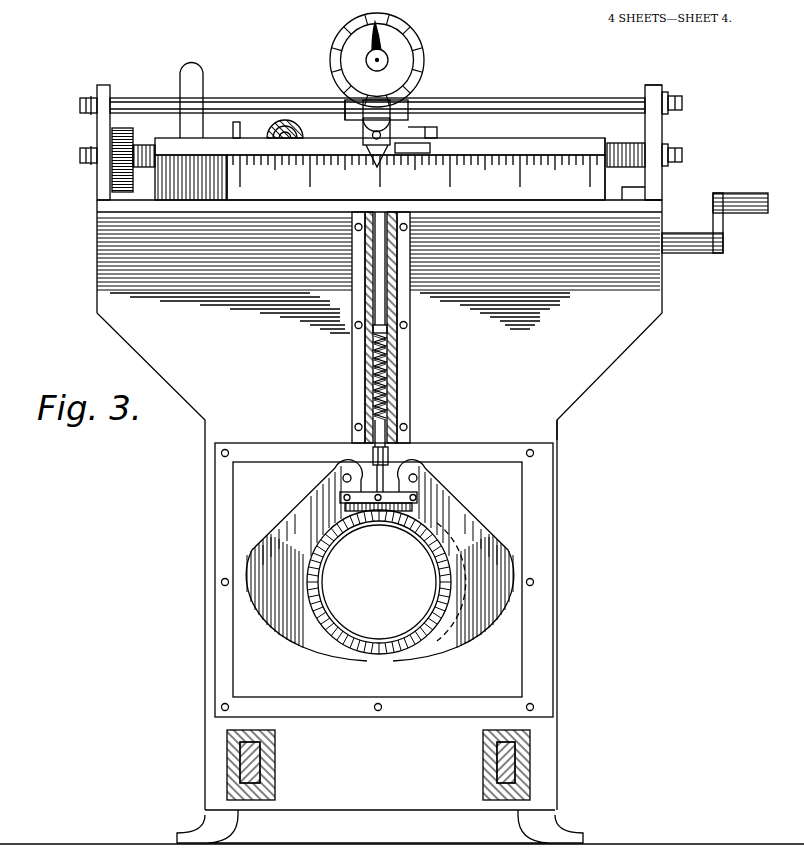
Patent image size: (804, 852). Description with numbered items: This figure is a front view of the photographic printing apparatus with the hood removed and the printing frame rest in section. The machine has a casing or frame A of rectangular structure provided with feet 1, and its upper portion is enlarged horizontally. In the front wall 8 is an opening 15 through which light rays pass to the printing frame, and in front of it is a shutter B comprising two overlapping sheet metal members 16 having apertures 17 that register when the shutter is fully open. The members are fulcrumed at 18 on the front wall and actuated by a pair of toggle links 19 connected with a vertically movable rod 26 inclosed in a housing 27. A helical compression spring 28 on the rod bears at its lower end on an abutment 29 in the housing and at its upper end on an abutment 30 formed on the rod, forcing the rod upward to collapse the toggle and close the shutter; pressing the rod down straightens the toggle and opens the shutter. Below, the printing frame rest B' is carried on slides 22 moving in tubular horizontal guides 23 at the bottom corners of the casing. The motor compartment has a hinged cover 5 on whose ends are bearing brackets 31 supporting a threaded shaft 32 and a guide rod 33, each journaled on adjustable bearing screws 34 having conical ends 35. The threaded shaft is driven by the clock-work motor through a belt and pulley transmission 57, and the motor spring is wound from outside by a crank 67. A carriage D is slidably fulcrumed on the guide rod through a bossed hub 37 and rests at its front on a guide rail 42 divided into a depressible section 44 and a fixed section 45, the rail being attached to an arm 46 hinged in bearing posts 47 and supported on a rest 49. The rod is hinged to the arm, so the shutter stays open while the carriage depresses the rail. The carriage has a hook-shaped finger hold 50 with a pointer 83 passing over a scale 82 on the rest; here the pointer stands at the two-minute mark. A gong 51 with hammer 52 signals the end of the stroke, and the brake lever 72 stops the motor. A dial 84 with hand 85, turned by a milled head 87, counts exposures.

The feet 1 is at (561, 830).
The hinged cover 5 is at (648, 204).
The front wall 8 is at (560, 427).
The opening 15 is at (430, 655).
The shutter members 16 is at (315, 655).
The apertures 17 is at (383, 655).
The fulcrum 18 is at (345, 474).
The toggle links 19 is at (393, 504).
The slides 22 is at (250, 767).
The tubular horizontal guides 23 is at (500, 800).
The vertically movable rod 26 is at (374, 300).
The housing 27 is at (396, 300).
The helical compression spring 28 is at (387, 371).
The abutment 29 is at (374, 432).
The abutment 30 is at (395, 332).
The bearing brackets 31 is at (98, 128).
The threaded shaft 32 is at (627, 146).
The guide rod 33 is at (565, 104).
The adjustable bearing screws 34 is at (80, 106).
The conical ends 35 is at (646, 96).
The bossed hub 37 is at (347, 108).
The guide rail 42 is at (582, 152).
The depressible section 44 is at (520, 147).
The fixed section 45 is at (176, 139).
The arm 46 is at (445, 128).
The bearing posts 47 is at (432, 145).
The rest 49 is at (176, 182).
The finger hold 50 is at (365, 117).
The gong 51 is at (283, 125).
The hammer 52 is at (237, 122).
The belt and pulley transmission 57 is at (125, 183).
The crank 67 is at (724, 233).
The lever 72 is at (200, 76).
The scale 82 is at (624, 192).
The pointer 83 is at (433, 128).
The dial 84 is at (410, 52).
The hand 85 is at (368, 50).
The milled head 87 is at (382, 61).
The casing A is at (665, 290).
The shutter B is at (400, 580).
The printing frame rest B' is at (573, 743).
The carriage D is at (385, 90).